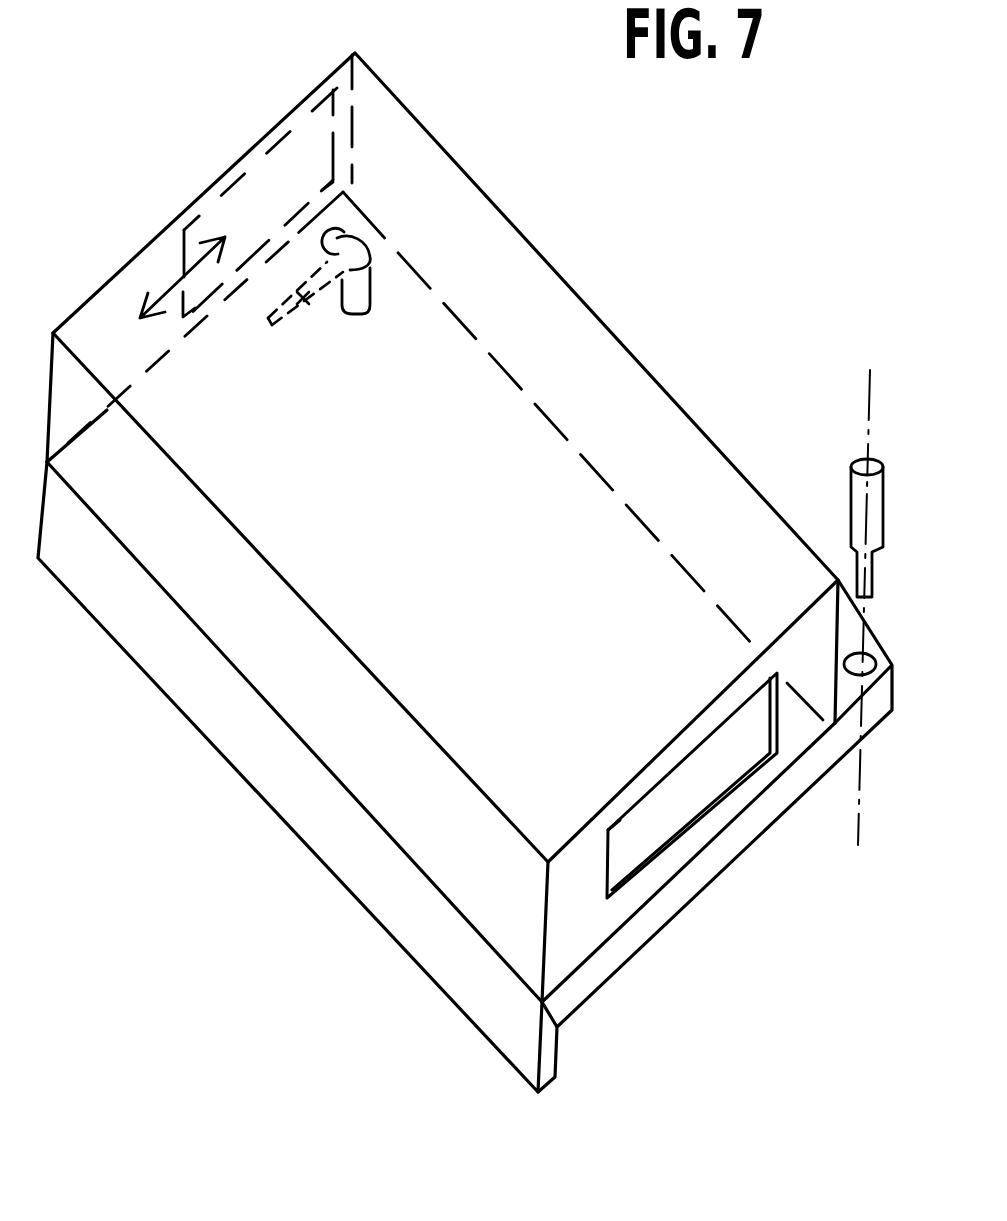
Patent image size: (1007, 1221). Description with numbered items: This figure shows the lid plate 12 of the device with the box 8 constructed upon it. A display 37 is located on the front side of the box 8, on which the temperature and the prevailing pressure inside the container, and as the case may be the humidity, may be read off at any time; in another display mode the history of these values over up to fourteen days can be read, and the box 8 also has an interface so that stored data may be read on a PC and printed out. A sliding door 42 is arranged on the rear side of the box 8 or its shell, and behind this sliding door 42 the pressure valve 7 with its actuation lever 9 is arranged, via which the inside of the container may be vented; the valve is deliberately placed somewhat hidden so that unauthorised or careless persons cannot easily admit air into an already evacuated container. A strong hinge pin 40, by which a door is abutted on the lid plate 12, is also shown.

The pressure valve 7 is at (370, 285).
The box 8 is at (582, 348).
The actuation lever 9 is at (307, 300).
The lid plate 12 is at (243, 742).
The display 37 is at (714, 764).
The hinge pin 40 is at (850, 497).
The sliding door 42 is at (228, 227).